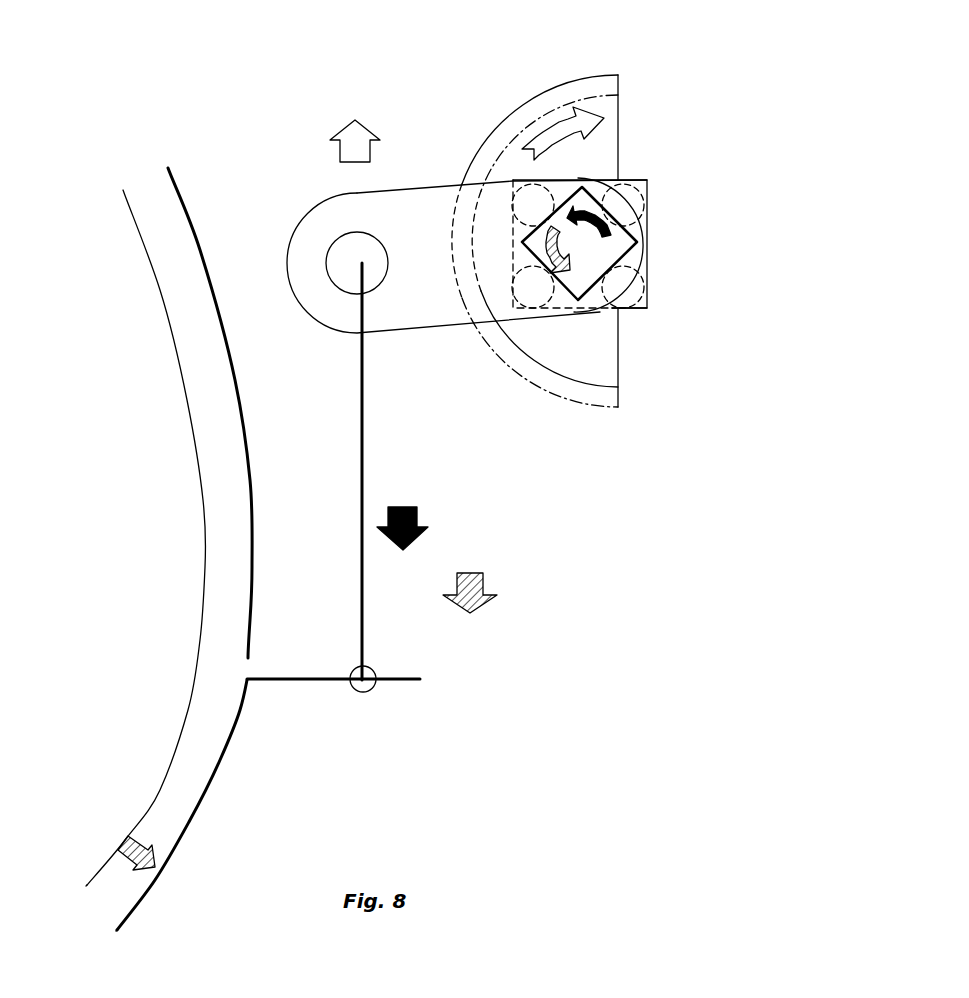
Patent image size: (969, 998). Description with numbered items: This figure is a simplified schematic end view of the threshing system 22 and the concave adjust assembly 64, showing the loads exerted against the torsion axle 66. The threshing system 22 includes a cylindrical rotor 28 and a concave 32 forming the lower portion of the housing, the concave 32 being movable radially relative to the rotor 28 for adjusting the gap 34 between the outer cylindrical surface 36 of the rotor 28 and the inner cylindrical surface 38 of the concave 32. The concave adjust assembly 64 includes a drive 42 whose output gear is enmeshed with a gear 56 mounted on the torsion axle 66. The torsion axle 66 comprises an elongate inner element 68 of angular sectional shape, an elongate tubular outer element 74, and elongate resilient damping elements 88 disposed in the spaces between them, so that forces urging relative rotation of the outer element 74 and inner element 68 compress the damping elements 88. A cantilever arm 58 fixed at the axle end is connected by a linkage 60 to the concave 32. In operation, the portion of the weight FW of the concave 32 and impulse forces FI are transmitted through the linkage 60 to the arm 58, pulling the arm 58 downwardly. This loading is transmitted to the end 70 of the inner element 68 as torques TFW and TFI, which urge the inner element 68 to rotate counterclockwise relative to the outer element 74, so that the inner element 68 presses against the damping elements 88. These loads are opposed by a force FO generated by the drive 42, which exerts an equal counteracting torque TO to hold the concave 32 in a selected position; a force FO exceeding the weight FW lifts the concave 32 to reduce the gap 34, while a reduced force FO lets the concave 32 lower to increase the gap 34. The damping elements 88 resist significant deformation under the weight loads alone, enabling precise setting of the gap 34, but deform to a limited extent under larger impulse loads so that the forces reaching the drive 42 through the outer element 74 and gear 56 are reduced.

The threshing system 22 is at (216, 128).
The rotor 28 is at (124, 188).
The concave 32 is at (187, 837).
The gap 34 is at (188, 763).
The outer cylindrical surface 36 is at (82, 890).
The inner cylindrical surface 38 is at (127, 910).
The drive 42 is at (618, 100).
The gear 56 is at (530, 98).
The cantilever arm 58 is at (413, 193).
The linkage 60 is at (364, 403).
The concave adjust assembly 64 is at (636, 68).
The torsion axle 66 is at (654, 176).
The inner element 68 is at (640, 243).
The longitudinal end 70 is at (645, 231).
The outer element 74 is at (648, 306).
The damping element 88 is at (515, 197).
The counteracting torque TO is at (560, 128).
The torque from concave weight TFW is at (586, 208).
The torque from impulse force TFI is at (540, 240).
The drive force FO is at (340, 152).
The weight force FW is at (425, 520).
The impulse force FI is at (487, 583).